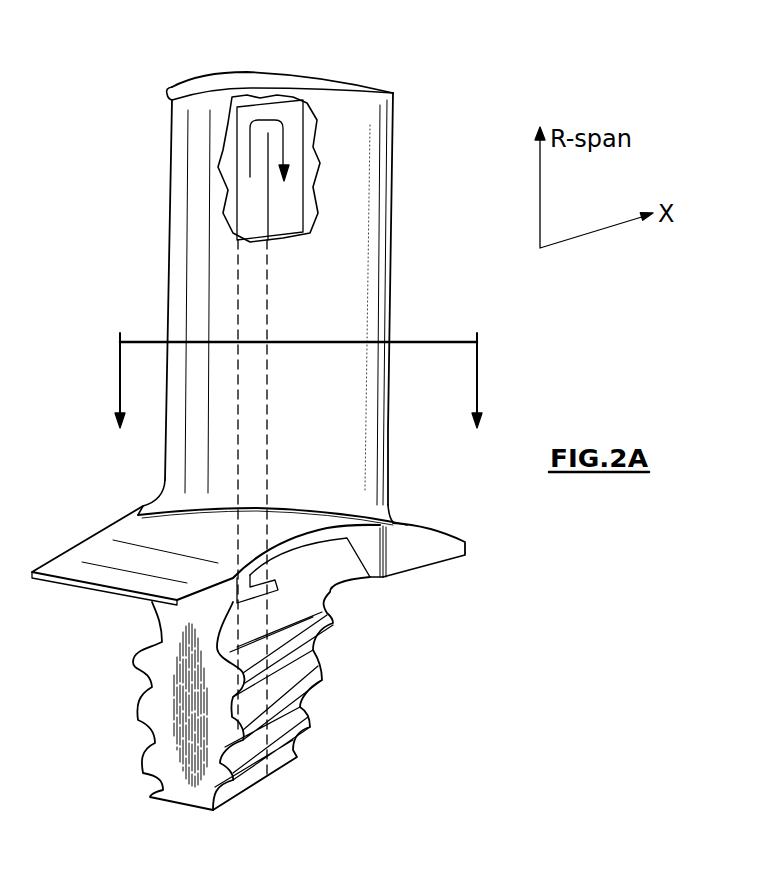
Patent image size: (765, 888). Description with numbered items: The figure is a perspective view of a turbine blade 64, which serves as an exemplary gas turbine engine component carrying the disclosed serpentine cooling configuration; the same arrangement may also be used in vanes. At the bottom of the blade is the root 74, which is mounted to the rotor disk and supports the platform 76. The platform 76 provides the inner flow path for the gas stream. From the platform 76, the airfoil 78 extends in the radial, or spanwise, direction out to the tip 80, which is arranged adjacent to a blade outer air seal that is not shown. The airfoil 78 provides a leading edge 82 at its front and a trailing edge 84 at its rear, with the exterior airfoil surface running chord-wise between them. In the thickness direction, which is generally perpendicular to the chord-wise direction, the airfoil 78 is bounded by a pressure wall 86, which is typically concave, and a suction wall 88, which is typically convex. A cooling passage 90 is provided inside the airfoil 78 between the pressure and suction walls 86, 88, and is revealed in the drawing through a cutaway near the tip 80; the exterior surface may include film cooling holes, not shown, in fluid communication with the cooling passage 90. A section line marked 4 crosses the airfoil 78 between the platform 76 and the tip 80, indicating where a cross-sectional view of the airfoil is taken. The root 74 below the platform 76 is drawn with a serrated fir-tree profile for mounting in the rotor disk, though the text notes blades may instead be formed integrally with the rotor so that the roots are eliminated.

The section line 4- 4 is at (298, 383).
The turbine blade 64 is at (135, 256).
The root 74 is at (177, 707).
The platform 76 is at (285, 522).
The airfoil 78 is at (345, 397).
The tip 80 is at (190, 78).
The leading edge 82 is at (168, 252).
The trailing edge 84 is at (393, 243).
The pressure wall 86 is at (309, 306).
The suction wall 88 is at (313, 66).
The cooling passage 90 is at (320, 180).